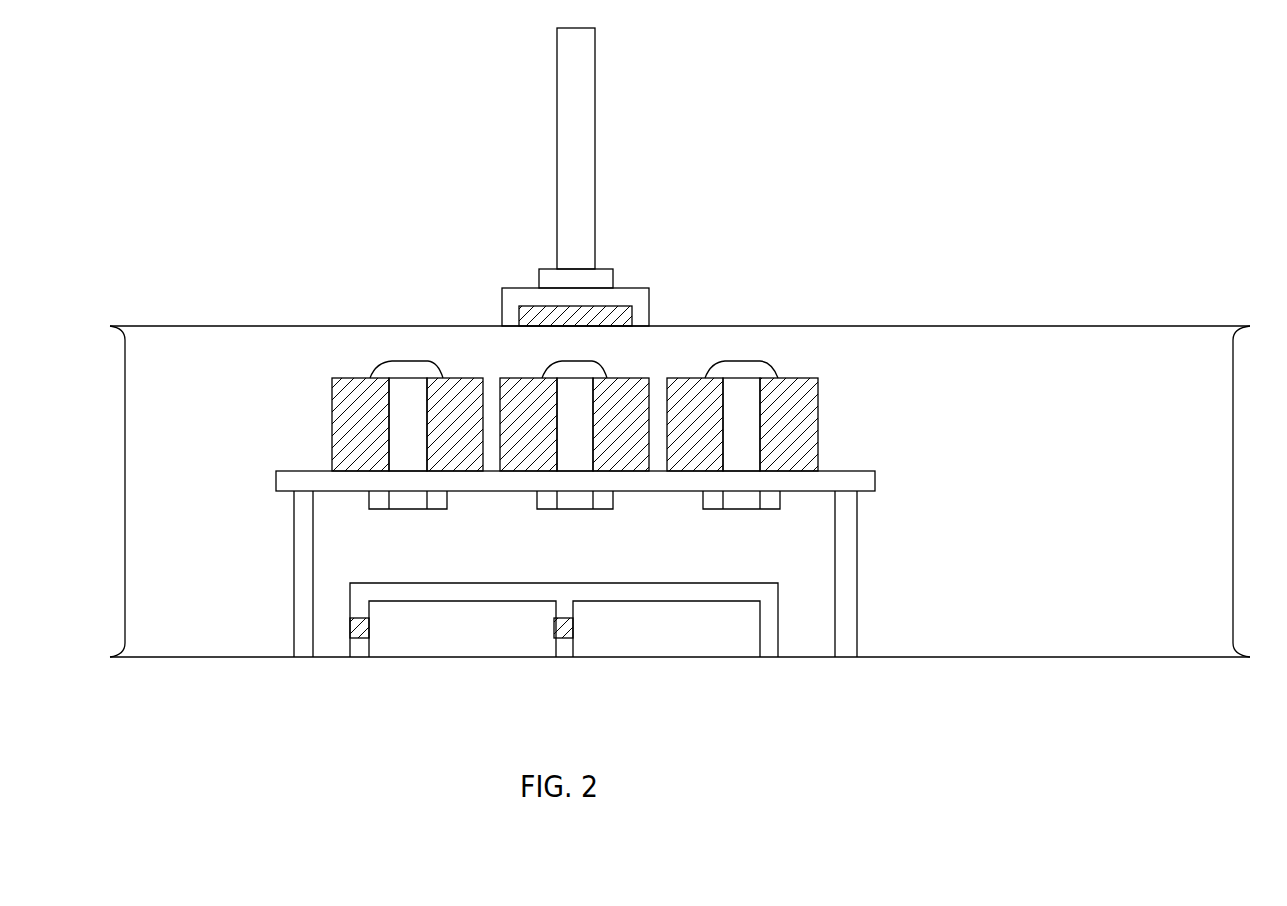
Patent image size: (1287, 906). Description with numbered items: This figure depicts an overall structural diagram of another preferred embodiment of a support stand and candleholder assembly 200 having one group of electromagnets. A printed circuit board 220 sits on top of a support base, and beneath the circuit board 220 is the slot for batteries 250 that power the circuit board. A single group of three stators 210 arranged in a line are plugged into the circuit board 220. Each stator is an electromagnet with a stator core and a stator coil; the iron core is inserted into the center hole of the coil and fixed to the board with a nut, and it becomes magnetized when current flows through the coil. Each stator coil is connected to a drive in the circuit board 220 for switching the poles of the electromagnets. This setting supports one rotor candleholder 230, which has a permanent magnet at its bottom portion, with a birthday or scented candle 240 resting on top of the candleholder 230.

The support stand and candleholder assembly 200 is at (967, 565).
The stators 210 is at (743, 399).
The printed circuit board 220 is at (875, 491).
The rotor candleholder 230 is at (498, 287).
The candle 240 is at (578, 104).
The batteries 250 is at (707, 638).